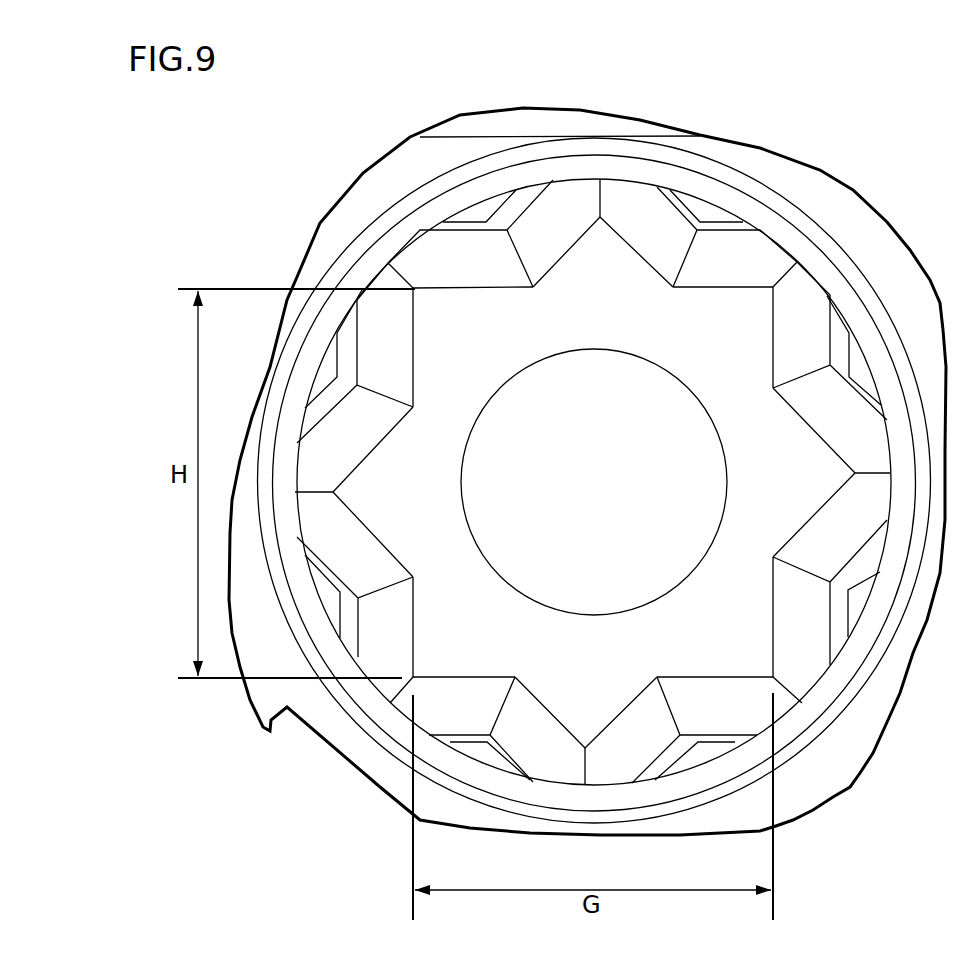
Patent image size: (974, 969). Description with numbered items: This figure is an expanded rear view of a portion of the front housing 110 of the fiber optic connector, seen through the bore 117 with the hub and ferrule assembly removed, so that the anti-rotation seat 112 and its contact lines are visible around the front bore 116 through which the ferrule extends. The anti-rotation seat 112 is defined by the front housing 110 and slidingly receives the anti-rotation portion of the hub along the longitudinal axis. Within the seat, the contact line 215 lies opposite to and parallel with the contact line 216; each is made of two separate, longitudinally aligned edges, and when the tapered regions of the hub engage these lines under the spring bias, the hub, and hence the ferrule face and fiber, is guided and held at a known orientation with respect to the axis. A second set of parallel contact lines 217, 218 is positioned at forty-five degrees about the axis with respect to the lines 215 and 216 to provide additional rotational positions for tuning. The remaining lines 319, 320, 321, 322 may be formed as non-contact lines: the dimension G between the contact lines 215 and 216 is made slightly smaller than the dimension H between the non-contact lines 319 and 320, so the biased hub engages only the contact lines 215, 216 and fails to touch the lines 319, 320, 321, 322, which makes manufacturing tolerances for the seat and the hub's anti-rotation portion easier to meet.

The front housing 110 is at (870, 241).
The bore 117 is at (782, 207).
The anti-rotation seat 112 is at (605, 233).
The front bore 116 is at (713, 429).
The non-contact line 320 is at (483, 289).
The contact line 216 is at (415, 345).
The contact line 215 is at (773, 328).
The non-contact line 319 is at (453, 678).
The contact line 217 is at (567, 252).
The non-contact line 321 is at (647, 265).
The contact line 218 is at (815, 517).
The non-contact line 322 is at (372, 532).